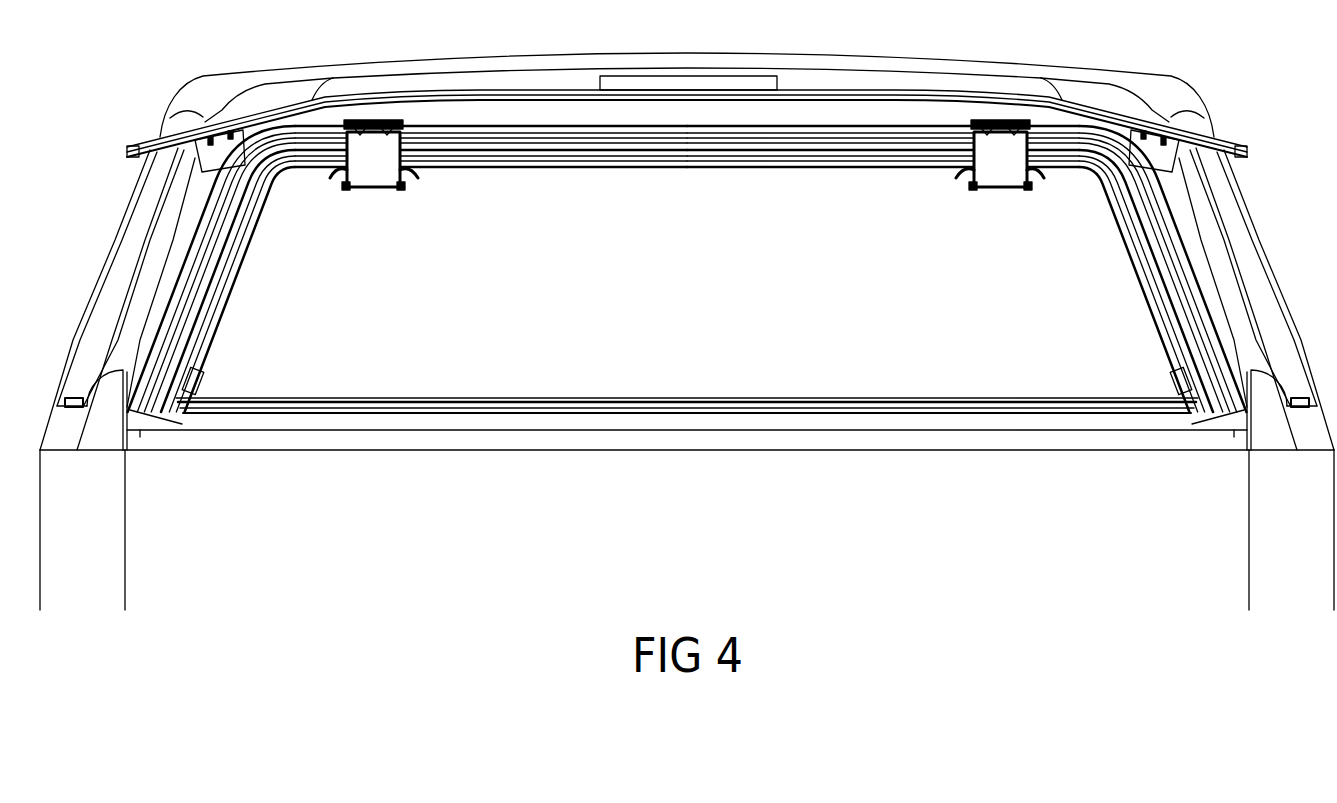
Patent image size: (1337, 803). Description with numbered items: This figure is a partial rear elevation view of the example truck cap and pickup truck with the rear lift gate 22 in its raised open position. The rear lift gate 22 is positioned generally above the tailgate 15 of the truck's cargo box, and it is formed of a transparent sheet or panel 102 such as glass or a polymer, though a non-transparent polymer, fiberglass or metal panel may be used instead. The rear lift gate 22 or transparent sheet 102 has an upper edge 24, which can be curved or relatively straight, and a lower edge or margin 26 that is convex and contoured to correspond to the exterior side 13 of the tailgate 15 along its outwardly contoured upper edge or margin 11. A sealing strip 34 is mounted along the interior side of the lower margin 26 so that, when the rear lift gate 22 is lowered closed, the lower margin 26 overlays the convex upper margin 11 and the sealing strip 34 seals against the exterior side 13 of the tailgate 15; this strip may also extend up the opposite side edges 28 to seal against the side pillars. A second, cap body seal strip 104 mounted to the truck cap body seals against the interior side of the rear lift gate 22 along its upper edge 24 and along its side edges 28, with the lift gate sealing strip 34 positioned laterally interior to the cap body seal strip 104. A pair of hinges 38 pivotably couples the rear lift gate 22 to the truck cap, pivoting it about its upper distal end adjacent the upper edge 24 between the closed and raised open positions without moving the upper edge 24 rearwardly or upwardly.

The upper edge or margin 11 is at (657, 440).
The rearward or exterior side 13 is at (700, 546).
The tailgate 15 is at (760, 480).
The rear lift gate 22 is at (463, 90).
The upper edge 24 is at (843, 128).
The lower edge or margin 26 is at (813, 92).
The side edges 28 is at (137, 148).
The sealing strip 34 is at (150, 152).
The hinges 38 is at (368, 173).
The transparent sheet or panel 102 is at (627, 103).
The cap body seal strip 104 is at (742, 147).